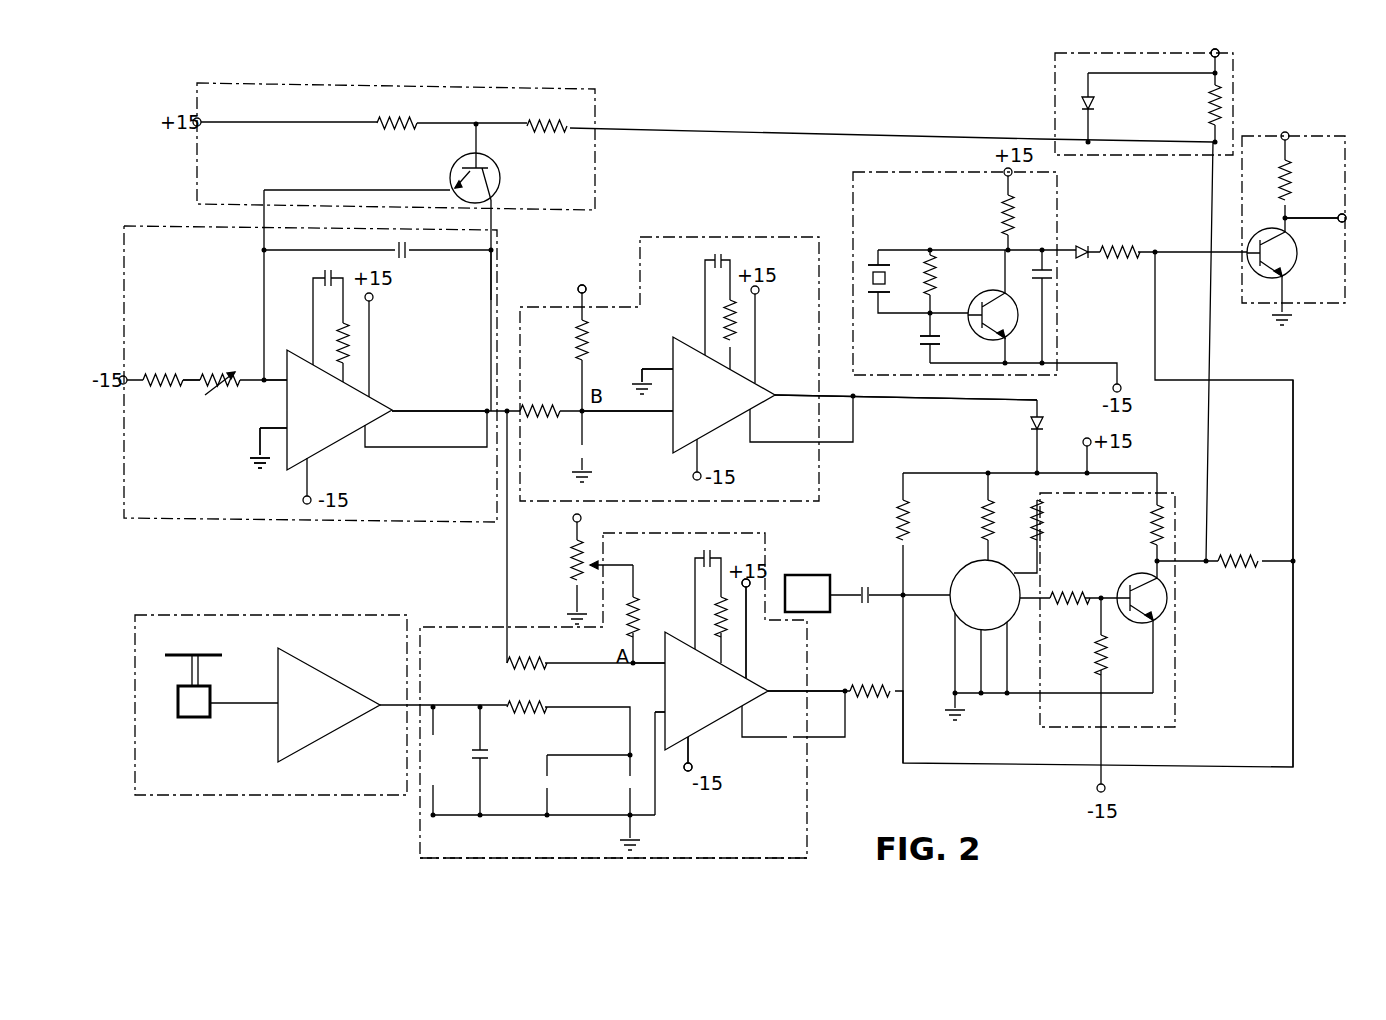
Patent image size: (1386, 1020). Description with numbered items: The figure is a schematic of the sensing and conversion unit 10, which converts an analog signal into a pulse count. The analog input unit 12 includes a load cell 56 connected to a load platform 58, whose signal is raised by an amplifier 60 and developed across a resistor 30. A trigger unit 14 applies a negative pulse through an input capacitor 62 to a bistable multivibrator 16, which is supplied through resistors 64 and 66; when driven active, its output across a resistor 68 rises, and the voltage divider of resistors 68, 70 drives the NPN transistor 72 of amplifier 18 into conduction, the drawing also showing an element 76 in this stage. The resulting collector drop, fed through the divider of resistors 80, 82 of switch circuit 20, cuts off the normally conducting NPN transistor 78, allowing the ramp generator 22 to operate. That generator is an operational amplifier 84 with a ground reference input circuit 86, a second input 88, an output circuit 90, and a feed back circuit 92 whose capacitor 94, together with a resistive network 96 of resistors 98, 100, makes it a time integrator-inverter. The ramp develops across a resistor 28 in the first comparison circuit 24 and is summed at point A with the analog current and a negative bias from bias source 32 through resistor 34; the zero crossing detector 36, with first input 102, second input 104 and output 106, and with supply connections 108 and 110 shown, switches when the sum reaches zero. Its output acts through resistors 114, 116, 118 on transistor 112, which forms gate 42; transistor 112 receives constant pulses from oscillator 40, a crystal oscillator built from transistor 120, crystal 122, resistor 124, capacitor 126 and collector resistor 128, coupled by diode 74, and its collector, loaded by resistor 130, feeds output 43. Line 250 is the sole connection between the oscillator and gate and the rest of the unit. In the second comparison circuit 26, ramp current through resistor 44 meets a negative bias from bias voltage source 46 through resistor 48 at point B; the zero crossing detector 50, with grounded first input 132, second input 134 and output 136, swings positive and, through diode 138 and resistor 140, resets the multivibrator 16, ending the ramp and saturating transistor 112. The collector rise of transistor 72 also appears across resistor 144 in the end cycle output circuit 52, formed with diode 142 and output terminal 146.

The sensing and conversion unit 10 is at (538, 840).
The analog input unit 12 is at (305, 617).
The trigger unit 14 is at (815, 578).
The bistable multivibrator 16 is at (997, 606).
The amplifier 18 is at (1167, 493).
The switch circuit 20 is at (597, 102).
The ramp generator 22 is at (372, 520).
The first comparison circuit 24 is at (806, 808).
The second comparison circuit 26 is at (698, 238).
The resistor 28 is at (536, 660).
The resistor 30 is at (535, 702).
The bias source 32 is at (570, 560).
The resistor 34 is at (638, 605).
The zero crossing detector 36 is at (708, 701).
The oscillator 40 is at (853, 184).
The gate 42 is at (1309, 220).
The output 43 is at (1332, 213).
The resistor 44 is at (534, 416).
The bias voltage source 46 is at (587, 291).
The resistor 48 is at (587, 340).
The zero crossing detector 50 is at (722, 402).
The end cycle output circuit 52 is at (1055, 90).
The load cell 56 is at (190, 708).
The load platform 58 is at (172, 658).
The amplifier 60 is at (330, 725).
The input capacitor 62 is at (868, 586).
The resistor 64 is at (908, 530).
The resistor 66 is at (983, 522).
The resistor 68 is at (1068, 592).
The resistor 70 is at (1097, 652).
The NPN transistor 72 is at (1126, 585).
The diode 74 is at (1080, 244).
The resistor 76 is at (1152, 523).
The NPN transistor 78 is at (496, 165).
The resistor 80 is at (398, 123).
The resistor 82 is at (548, 126).
The operational amplifier 84 is at (334, 421).
The ground reference input circuit 86 is at (258, 432).
The second input 88 is at (278, 365).
The output circuit 90 is at (415, 408).
The feed back circuit 92 is at (497, 285).
The capacitor 94 is at (405, 257).
The resistive network 96 is at (200, 372).
The resistor 98 is at (163, 372).
The resistor 100 is at (210, 372).
The first input 102 is at (660, 652).
The second input 104 is at (658, 712).
The output 106 is at (772, 690).
The supply lead 108 is at (747, 658).
The supply lead 110 is at (698, 745).
The transistor 112 is at (1252, 236).
The resistor 114 is at (870, 686).
The resistor 116 is at (1247, 549).
The resistor 118 is at (1126, 262).
The transistor 120 is at (970, 314).
The crystal 122 is at (876, 262).
The resistor 124 is at (936, 275).
The capacitor 126 is at (918, 340).
The resistor 128 is at (1003, 213).
The resistor 130 is at (1290, 180).
The first input 132 is at (648, 366).
The second input 134 is at (670, 418).
The output 136 is at (865, 402).
The diode 138 is at (1045, 420).
The resistor 140 is at (1032, 512).
The diode 142 is at (1098, 104).
The resistor 144 is at (1222, 96).
The output terminal 146 is at (1222, 56).
The line 250 is at (1295, 475).